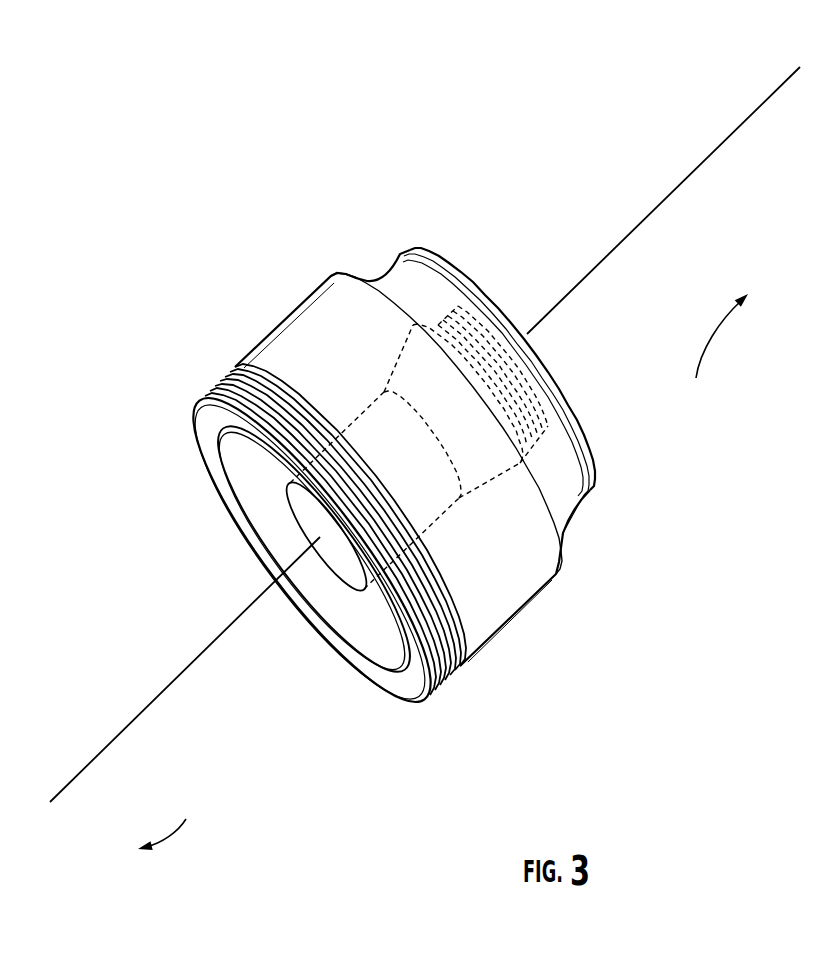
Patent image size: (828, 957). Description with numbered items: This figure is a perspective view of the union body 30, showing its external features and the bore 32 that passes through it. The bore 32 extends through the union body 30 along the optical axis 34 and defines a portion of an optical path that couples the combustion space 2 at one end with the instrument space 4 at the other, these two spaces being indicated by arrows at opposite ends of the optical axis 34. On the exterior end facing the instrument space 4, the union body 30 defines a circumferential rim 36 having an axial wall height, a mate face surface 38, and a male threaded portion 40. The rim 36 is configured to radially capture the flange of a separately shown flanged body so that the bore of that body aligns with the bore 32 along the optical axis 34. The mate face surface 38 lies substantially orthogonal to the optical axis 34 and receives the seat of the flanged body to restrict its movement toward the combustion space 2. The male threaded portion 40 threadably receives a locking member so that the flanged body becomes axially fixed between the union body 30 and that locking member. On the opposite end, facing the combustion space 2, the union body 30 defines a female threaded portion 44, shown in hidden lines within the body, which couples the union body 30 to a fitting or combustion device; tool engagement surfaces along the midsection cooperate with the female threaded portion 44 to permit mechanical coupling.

The union body 30 is at (415, 772).
The bore 32 is at (340, 551).
The optical axis 34 is at (741, 124).
The circumferential rim 36 is at (252, 548).
The mate face surface 38 is at (268, 465).
The male threaded portion 40 is at (238, 368).
The female threaded portion 44 is at (485, 347).
The combustion space 2 is at (716, 352).
The instrument space 4 is at (169, 829).